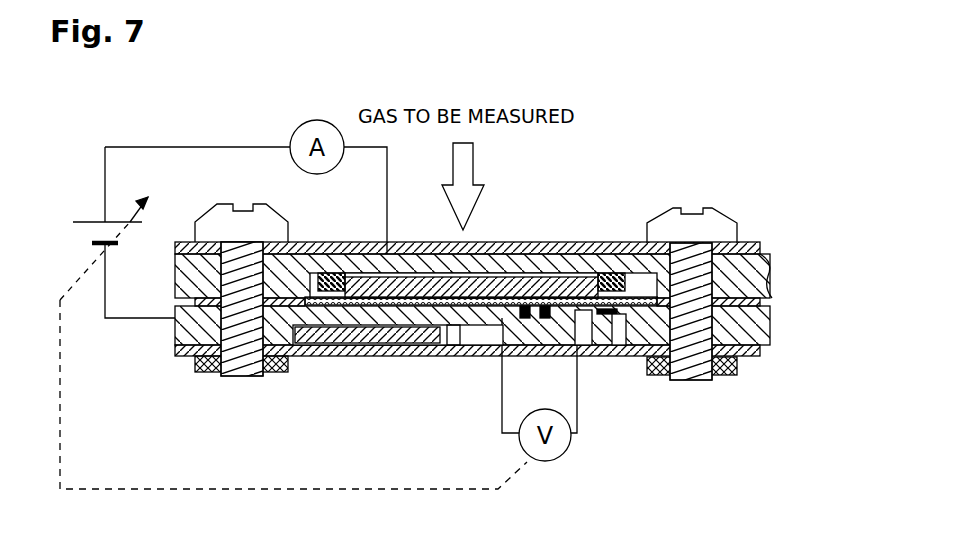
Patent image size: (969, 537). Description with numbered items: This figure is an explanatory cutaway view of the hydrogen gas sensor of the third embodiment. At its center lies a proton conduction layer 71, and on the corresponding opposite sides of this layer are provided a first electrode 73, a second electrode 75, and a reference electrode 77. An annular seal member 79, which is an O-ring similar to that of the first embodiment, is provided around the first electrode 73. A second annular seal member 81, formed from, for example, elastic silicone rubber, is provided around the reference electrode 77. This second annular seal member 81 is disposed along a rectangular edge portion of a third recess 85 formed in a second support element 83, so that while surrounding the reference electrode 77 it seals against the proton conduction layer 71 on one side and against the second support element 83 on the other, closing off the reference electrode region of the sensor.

The proton conduction layer 71 is at (557, 272).
The first electrode 73 is at (487, 276).
The second electrode 75 is at (447, 347).
The reference electrode 77 is at (588, 357).
The first annular seal member 79 is at (321, 276).
The second annular seal member 81 is at (627, 357).
The second support element 83 is at (753, 327).
The third recess 85 is at (622, 357).